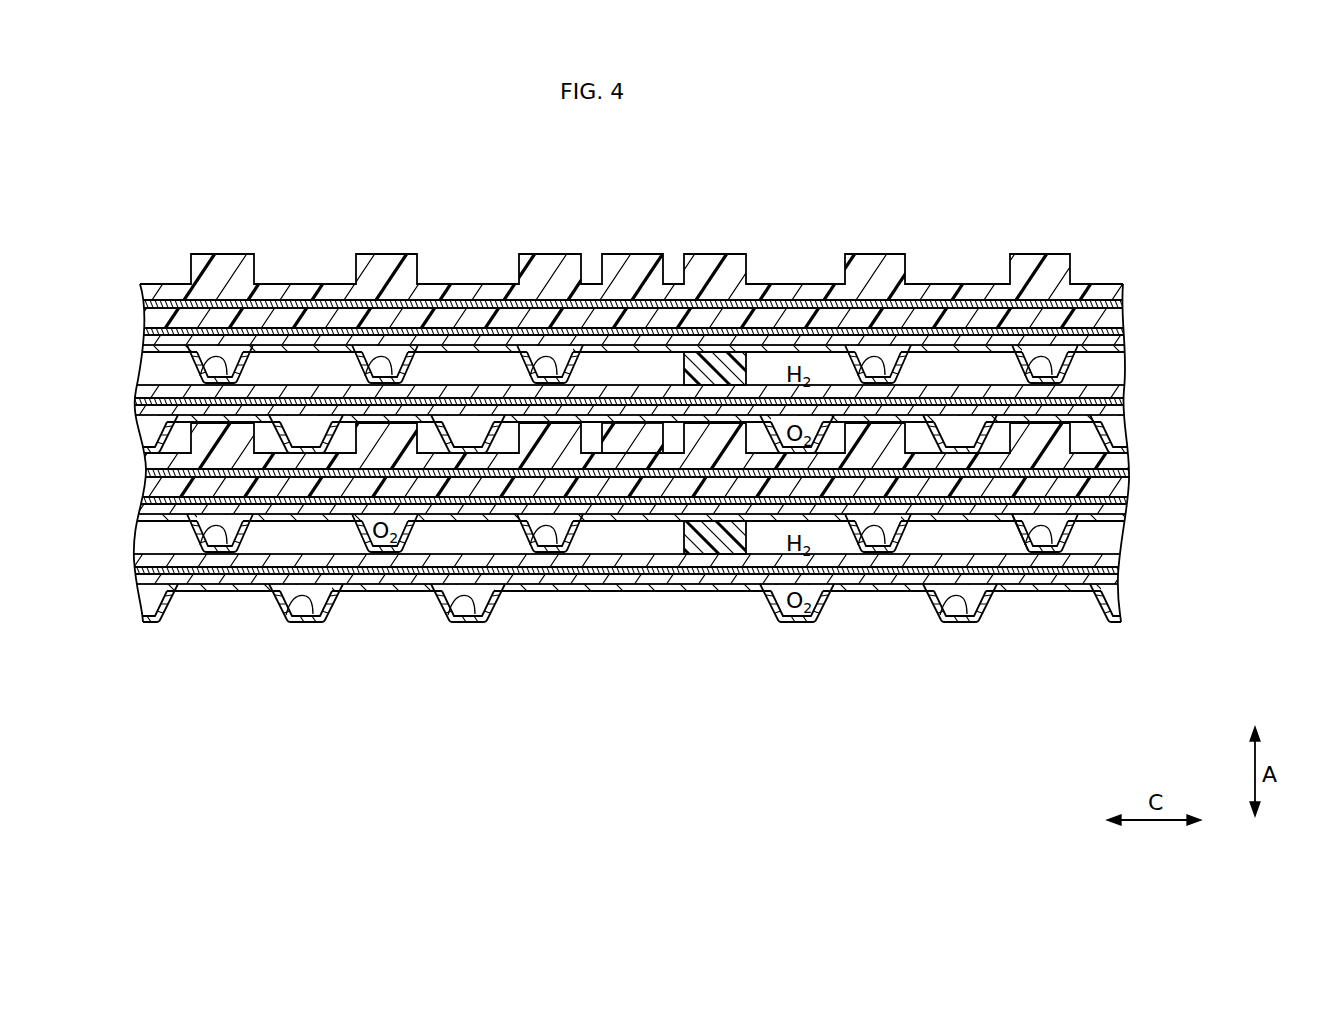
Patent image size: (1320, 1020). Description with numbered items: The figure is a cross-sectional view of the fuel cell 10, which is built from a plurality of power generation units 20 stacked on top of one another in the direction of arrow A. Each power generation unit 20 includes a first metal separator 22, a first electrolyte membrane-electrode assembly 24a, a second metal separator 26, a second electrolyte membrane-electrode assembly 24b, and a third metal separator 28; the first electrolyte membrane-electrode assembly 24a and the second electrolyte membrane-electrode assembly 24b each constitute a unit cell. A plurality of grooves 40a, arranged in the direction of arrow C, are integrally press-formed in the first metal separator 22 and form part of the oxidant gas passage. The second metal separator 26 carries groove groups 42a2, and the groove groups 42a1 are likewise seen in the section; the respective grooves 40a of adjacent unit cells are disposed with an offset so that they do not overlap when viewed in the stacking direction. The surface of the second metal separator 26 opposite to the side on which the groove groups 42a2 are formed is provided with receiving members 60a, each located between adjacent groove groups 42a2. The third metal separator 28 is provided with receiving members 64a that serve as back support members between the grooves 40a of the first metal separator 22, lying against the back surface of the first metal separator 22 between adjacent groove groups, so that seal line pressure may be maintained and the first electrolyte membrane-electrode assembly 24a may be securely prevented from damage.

The fuel cell 10 is at (731, 128).
The power generation unit 20 is at (1212, 432).
The first metal separator 22 is at (1137, 607).
The first electrolyte membrane-electrode assembly 24a is at (1139, 572).
The second electrolyte membrane-electrode assembly 24b is at (1138, 496).
The second metal separator 26 is at (1139, 522).
The third metal separator 28 is at (1137, 462).
The groove 40a is at (442, 597).
The flow field channel 42a1 is at (850, 631).
The groove group 42a2 is at (1021, 542).
The receiving member 60a is at (689, 538).
The receiving member 64a is at (634, 440).